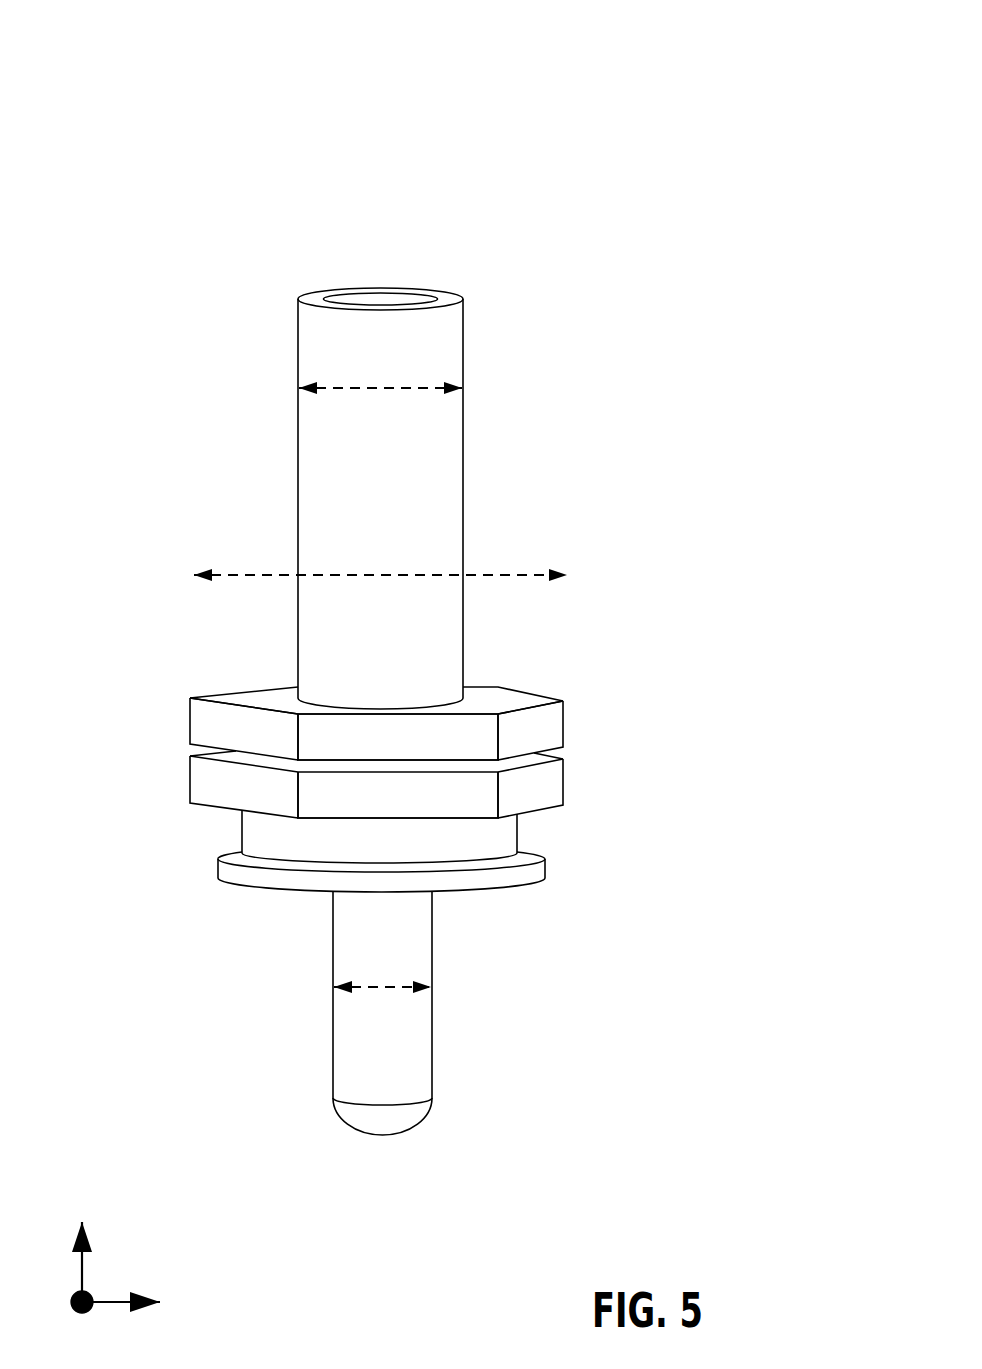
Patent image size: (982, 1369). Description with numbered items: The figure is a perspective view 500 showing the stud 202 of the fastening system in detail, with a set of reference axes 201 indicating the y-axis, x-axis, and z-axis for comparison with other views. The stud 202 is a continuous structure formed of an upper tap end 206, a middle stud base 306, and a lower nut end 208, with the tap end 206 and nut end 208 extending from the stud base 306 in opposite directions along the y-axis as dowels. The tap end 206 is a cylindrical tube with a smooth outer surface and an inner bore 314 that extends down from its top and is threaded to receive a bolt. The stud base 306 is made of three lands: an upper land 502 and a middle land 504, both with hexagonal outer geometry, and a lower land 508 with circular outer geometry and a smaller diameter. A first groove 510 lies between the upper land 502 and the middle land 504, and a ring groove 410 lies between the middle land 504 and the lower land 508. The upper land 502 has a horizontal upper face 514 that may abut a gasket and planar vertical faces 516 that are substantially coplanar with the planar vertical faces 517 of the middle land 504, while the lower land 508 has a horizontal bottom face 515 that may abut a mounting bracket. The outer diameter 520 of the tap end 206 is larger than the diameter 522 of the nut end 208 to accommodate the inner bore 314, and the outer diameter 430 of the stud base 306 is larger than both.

The perspective view 500 is at (537, 125).
The stud 202 is at (517, 292).
The tap end 206 is at (421, 503).
The inner bore 314 is at (380, 285).
The outer diameter 520 is at (356, 390).
The outer diameter 430 is at (367, 577).
The nut end 208 is at (393, 1028).
The diameter 522 is at (393, 986).
The stud base 306 is at (620, 711).
The upper land 502 is at (548, 730).
The upper face 514 is at (270, 700).
The planar vertical faces 516 is at (378, 735).
The first groove 510 is at (545, 766).
The middle land 504 is at (207, 792).
The planar vertical faces 517 is at (372, 793).
The lower land 508 is at (512, 880).
The ring groove 410 is at (373, 848).
The bottom face 515 is at (253, 890).
The reference axes 201 is at (128, 1254).